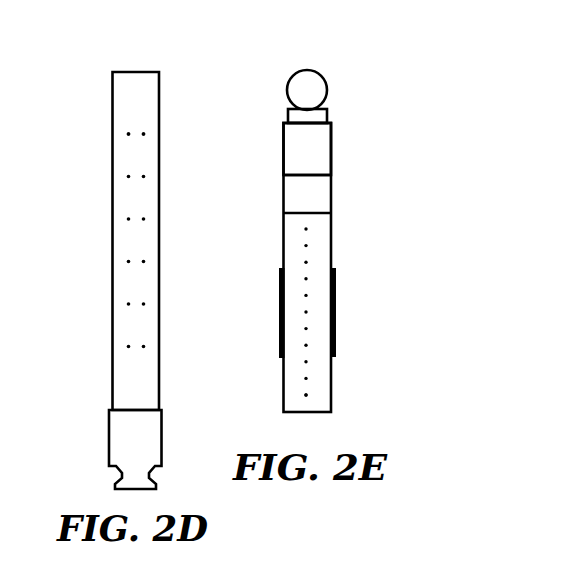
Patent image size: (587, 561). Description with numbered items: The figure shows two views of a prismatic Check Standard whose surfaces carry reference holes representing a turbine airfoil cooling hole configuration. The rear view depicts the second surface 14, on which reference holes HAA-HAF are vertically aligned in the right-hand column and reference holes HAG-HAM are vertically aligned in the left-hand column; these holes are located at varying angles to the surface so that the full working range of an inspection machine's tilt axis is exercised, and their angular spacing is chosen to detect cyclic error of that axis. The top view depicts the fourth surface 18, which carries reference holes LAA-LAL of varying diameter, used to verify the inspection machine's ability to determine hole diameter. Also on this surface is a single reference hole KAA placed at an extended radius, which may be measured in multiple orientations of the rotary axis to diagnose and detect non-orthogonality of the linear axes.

In FIG. 2D, the second surface 14 is at (152, 397).
In FIG. 2D, the reference holes HAG-HAM is at (124, 131).
In FIG. 2D, the reference holes HAA-HAF is at (149, 128).
In FIG. 2E, the fourth surface 18 is at (322, 297).
In FIG. 2E, the reference hole KAA is at (309, 148).
In FIG. 2E, the reference holes LAA-LAL is at (320, 401).